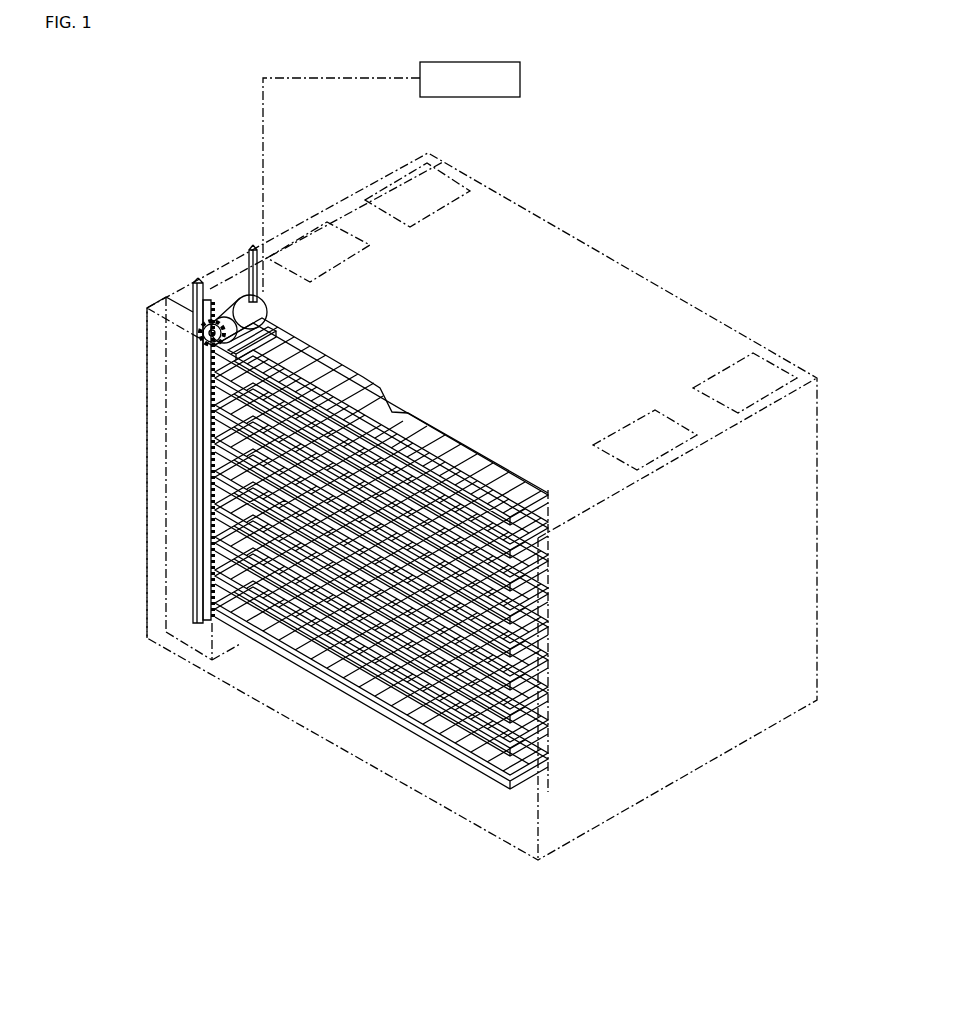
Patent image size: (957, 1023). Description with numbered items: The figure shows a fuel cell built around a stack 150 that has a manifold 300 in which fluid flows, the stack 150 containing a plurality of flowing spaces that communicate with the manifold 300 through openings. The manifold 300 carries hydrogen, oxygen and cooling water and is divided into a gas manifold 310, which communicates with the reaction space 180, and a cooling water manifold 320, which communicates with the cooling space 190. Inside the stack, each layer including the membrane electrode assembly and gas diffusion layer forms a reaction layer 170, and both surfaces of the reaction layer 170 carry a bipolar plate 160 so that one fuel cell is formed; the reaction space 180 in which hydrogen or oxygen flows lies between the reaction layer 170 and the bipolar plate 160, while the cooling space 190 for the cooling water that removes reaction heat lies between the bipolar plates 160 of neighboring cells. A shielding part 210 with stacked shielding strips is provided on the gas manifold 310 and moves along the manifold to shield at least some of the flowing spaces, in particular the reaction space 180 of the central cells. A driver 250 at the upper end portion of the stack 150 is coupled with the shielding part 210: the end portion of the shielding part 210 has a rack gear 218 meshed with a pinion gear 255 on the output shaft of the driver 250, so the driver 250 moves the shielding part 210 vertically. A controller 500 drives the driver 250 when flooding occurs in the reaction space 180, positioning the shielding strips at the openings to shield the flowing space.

The stack 150 is at (740, 759).
The bipolar plate 160 is at (381, 592).
The reaction layer 170 is at (263, 604).
The reaction space 180 is at (477, 714).
The cooling space 190 is at (381, 692).
The shielding part 210 is at (188, 312).
The rack gear 218 is at (205, 315).
The driver 250 is at (238, 310).
The pinion gear 255 is at (205, 342).
The manifold 300 is at (396, 520).
The gas manifold 310 is at (193, 302).
The cooling water manifold 320 is at (305, 233).
The controller 500 is at (520, 78).